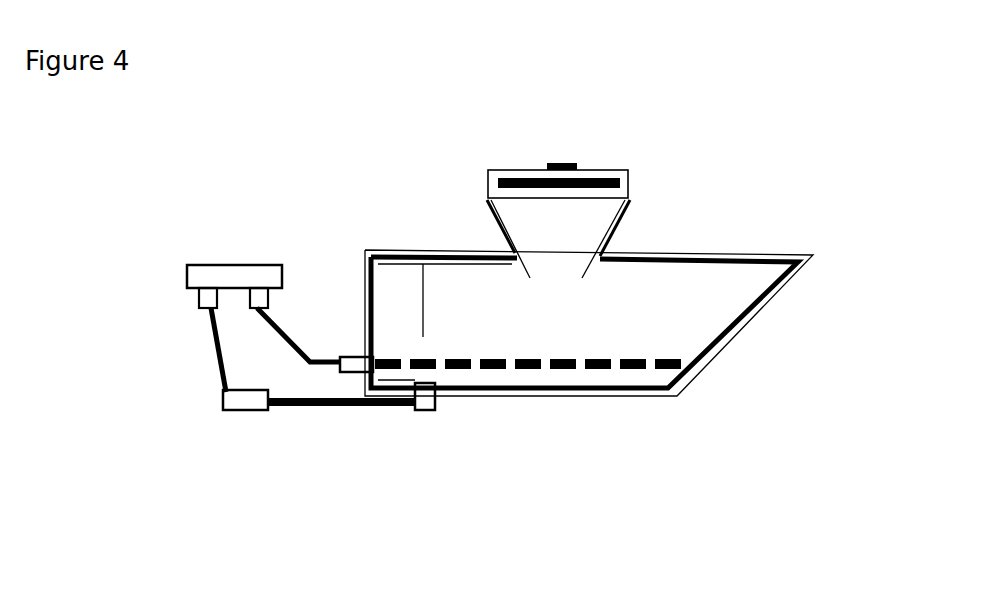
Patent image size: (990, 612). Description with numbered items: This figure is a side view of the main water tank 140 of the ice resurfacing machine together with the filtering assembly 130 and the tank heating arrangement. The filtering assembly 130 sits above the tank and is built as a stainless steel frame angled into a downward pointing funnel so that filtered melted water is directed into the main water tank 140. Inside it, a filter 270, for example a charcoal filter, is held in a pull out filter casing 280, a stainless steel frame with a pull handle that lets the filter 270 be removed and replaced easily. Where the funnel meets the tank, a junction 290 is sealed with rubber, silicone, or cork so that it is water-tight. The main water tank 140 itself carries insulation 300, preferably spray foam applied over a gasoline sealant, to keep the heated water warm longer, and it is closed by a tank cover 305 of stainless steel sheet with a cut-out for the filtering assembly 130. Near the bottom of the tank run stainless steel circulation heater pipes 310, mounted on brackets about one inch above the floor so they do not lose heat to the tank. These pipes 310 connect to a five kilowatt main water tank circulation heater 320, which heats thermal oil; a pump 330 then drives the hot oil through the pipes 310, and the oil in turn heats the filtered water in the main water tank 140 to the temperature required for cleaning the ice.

The filtering assembly 130 is at (600, 225).
The main water tank 140 is at (697, 322).
The filter 270 is at (587, 163).
The pull out filter casing 280 is at (568, 147).
The junction 290 is at (615, 237).
The insulation 300 is at (432, 255).
The tank cover 305 is at (458, 251).
The circulation heater pipes 310 is at (390, 360).
The main water tank circulation heater 320 is at (227, 264).
The pump 330 is at (288, 489).